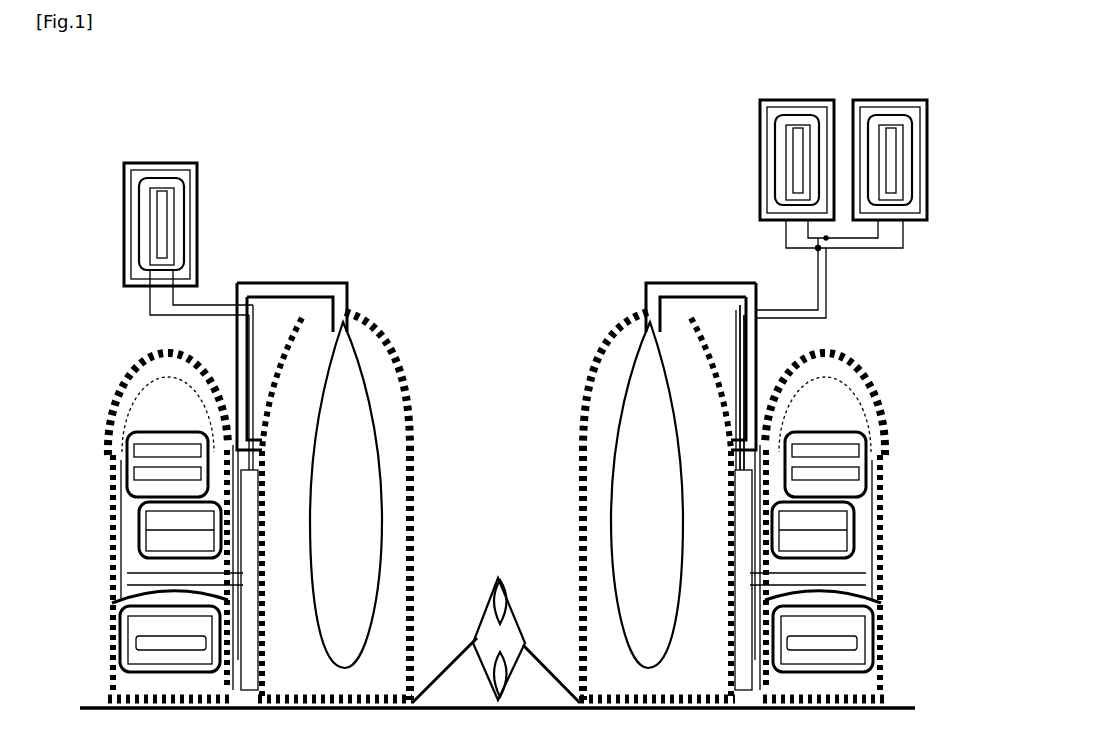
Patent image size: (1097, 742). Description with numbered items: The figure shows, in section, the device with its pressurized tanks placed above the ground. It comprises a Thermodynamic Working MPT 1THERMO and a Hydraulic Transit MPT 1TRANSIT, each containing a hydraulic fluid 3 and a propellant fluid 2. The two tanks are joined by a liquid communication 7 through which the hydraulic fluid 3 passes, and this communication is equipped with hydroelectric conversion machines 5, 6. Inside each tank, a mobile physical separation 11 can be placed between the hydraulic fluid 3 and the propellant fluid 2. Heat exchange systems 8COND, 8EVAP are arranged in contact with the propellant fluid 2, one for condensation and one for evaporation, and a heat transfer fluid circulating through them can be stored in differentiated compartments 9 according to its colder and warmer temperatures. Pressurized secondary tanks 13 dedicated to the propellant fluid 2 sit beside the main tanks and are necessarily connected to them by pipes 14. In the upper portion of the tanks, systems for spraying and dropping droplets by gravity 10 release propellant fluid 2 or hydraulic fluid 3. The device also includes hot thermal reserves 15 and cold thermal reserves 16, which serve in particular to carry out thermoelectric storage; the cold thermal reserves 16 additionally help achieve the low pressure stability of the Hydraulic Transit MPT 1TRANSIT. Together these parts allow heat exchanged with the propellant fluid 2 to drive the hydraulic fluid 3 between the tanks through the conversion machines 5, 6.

The Hydraulic Transit MPT 1TRANSIT is at (405, 452).
The Thermodynamic Working MPT 1THERMO is at (580, 455).
The propellant fluid 2 is at (350, 508).
The hydraulic fluid 3 is at (388, 622).
The hydroelectric conversion machine 5 is at (497, 590).
The hydroelectric conversion machine 6 is at (500, 672).
The liquid communication 7 is at (462, 648).
The condensing heat exchange system 8COND is at (185, 436).
The evaporating heat exchange system 8EVAP is at (160, 678).
The differentiated compartments 9 is at (718, 412).
The systems for spraying and dropping droplets by gravity 10 is at (150, 393).
The mobile physical separation 11 is at (365, 380).
The pressurized secondary tank 13 is at (122, 432).
The pipe 14 is at (237, 350).
The hot thermal reserve 15 is at (826, 240).
The cold thermal reserve 16 is at (130, 282).